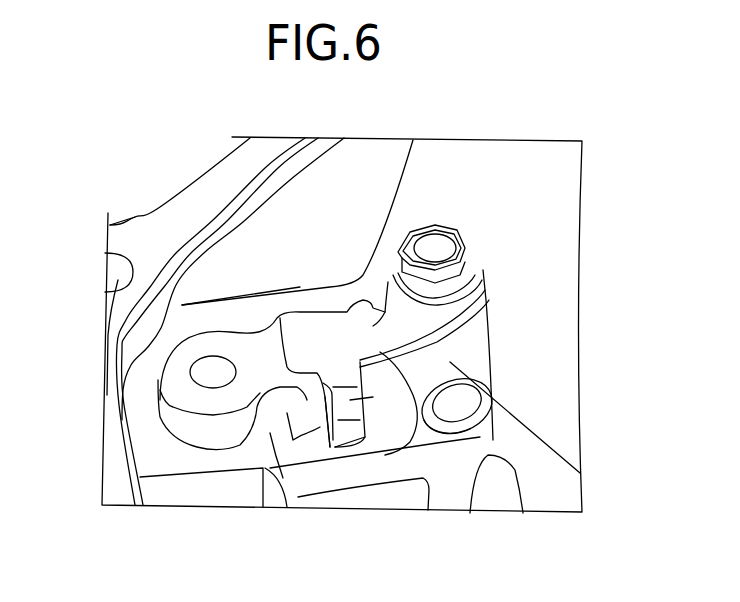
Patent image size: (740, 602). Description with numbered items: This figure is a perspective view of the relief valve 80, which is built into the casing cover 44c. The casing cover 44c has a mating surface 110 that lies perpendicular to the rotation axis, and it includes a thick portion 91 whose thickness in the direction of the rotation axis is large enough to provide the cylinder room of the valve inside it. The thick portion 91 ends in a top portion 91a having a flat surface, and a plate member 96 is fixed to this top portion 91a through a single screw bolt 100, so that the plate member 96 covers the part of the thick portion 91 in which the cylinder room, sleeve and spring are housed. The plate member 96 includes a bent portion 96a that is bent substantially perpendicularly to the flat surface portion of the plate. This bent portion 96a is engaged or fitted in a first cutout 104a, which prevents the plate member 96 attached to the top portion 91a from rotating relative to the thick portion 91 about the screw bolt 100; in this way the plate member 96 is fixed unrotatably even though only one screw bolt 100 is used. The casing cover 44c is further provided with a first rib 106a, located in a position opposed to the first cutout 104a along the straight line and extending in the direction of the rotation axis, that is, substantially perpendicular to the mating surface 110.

The casing cover 44c is at (127, 214).
The relief valve 80 is at (330, 303).
The thick portion 91 is at (185, 421).
The top portion 91a is at (177, 373).
The plate member 96 is at (318, 344).
The bent portion 96a is at (357, 388).
The screw bolt 100 is at (440, 247).
The first cutout 104a is at (350, 398).
The first rib 106a is at (365, 465).
The mating surface 110 is at (210, 190).